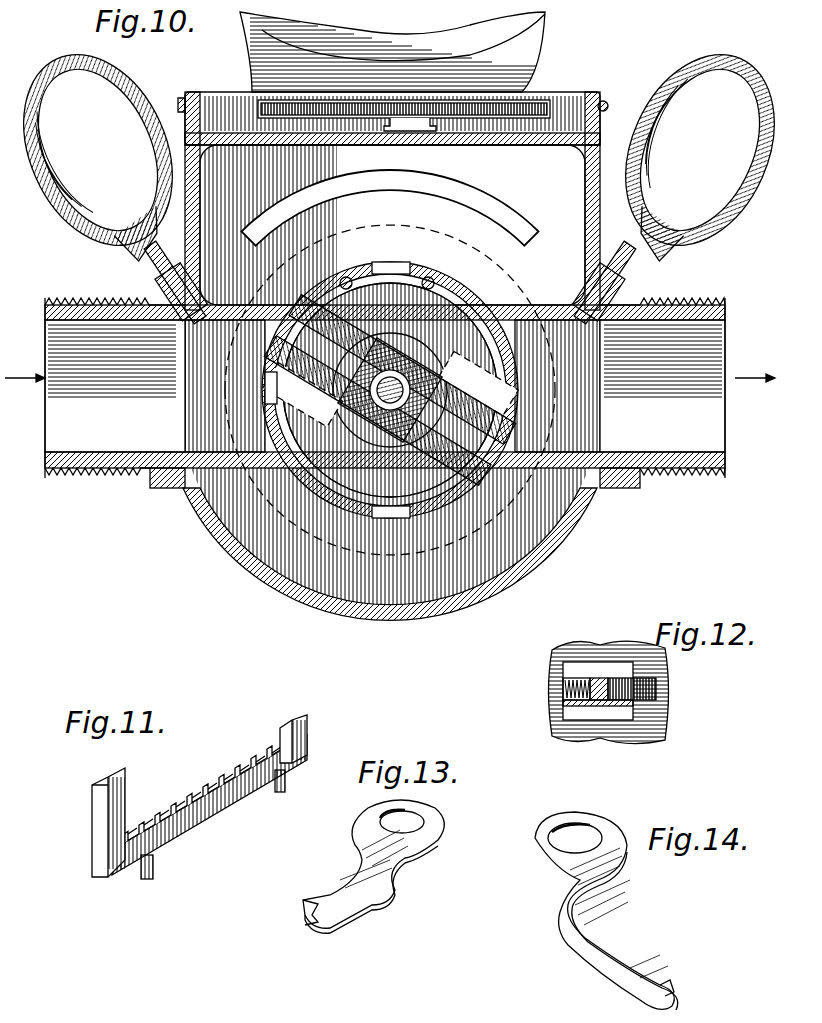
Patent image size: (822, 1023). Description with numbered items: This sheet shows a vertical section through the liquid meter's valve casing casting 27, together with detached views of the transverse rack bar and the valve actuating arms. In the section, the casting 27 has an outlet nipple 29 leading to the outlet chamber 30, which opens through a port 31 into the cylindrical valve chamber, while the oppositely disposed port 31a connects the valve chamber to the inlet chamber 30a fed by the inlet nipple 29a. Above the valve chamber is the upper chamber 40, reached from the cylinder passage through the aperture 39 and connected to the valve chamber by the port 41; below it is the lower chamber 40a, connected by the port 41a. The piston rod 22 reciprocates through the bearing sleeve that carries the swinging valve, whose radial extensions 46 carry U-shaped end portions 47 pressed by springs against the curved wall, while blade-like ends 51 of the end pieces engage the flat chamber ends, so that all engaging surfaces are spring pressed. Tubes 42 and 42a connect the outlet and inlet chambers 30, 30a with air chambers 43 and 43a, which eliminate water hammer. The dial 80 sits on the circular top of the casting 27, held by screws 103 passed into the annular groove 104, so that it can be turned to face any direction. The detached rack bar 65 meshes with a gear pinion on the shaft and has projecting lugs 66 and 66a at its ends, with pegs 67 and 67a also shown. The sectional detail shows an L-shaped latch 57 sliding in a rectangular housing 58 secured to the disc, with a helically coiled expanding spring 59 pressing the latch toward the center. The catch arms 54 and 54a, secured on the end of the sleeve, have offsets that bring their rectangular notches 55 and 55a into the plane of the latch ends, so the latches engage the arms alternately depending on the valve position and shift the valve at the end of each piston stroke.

In FIG. 10, the piston rod 22 is at (265, 505).
In FIG. 10, the valve casing casting 27 is at (590, 578).
In FIG. 10, the outlet nipple 29 is at (662, 388).
In FIG. 10, the inlet nipple 29a is at (115, 388).
In FIG. 10, the outlet chamber 30 is at (582, 432).
In FIG. 10, the inlet chamber 30a is at (150, 478).
In FIG. 10, the port 31 is at (508, 382).
In FIG. 10, the port 31a is at (270, 386).
In FIG. 10, the aperture 39 is at (515, 210).
In FIG. 10, the upper chamber 40 is at (390, 295).
In FIG. 10, the lower chamber 40a is at (390, 472).
In FIG. 10, the port 41 is at (395, 262).
In FIG. 10, the port 41a is at (388, 518).
In FIG. 10, the tube 42 is at (616, 287).
In FIG. 10, the tube 42a is at (150, 288).
In FIG. 10, the air chamber 43 is at (696, 158).
In FIG. 10, the air chamber 43a is at (104, 158).
In FIG. 10, the radial extensions 46 is at (350, 290).
In FIG. 10, the end portions 47 is at (330, 300).
In FIG. 10, the blade-like ends 51 is at (258, 380).
In FIG. 13, the catch arm 54 is at (358, 847).
In FIG. 14, the catch arm 54a is at (575, 905).
In FIG. 13, the rectangular notch 55 is at (303, 913).
In FIG. 14, the rectangular notch 55a is at (672, 993).
In FIG. 12, the L-shaped latch 57 is at (598, 700).
In FIG. 12, the rectangular housing 58 is at (563, 712).
In FIG. 12, the helically coiled expanding spring 59 is at (565, 690).
In FIG. 11, the rack bar 65 is at (195, 835).
In FIG. 12, the rack bar 65 is at (656, 688).
In FIG. 11, the projecting lug 66 is at (92, 793).
In FIG. 12, the projecting lug 66 is at (605, 700).
In FIG. 11, the projecting lug 66a is at (307, 730).
In FIG. 11, the rack peg 67 is at (148, 879).
In FIG. 11, the rack peg 67a is at (280, 792).
In FIG. 10, the dial 80 is at (548, 18).
In FIG. 10, the screws 103 is at (606, 104).
In FIG. 10, the annular groove 104 is at (185, 100).